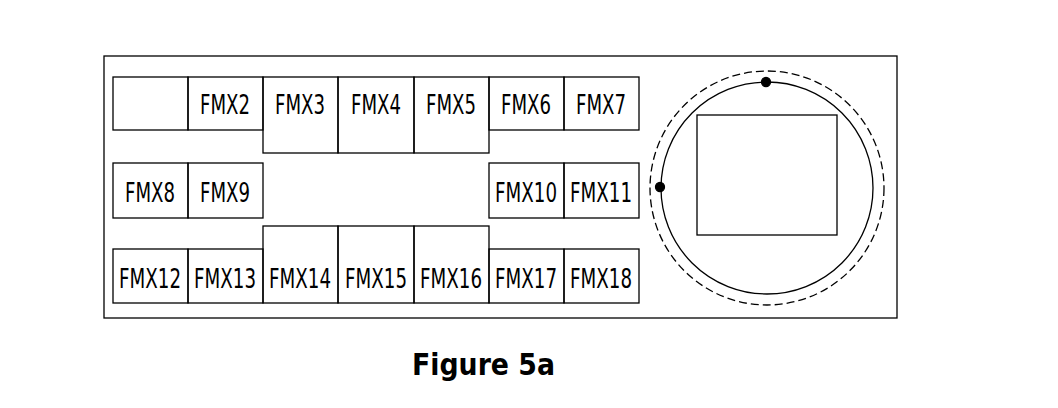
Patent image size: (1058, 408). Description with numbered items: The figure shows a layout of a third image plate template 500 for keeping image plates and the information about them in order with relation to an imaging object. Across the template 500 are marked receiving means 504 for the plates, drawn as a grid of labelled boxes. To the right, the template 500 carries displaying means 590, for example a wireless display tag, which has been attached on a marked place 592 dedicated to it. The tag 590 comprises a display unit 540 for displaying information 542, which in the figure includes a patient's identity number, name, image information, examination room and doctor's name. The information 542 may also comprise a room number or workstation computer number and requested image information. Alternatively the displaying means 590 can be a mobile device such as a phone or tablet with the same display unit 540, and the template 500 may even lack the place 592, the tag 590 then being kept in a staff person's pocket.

The third image plate template 500 is at (103, 152).
The marked receiving means 504 is at (112, 97).
The display unit 540 is at (779, 150).
The information 542 is at (738, 117).
The displaying means 590 is at (858, 117).
The marked place 592 is at (882, 220).